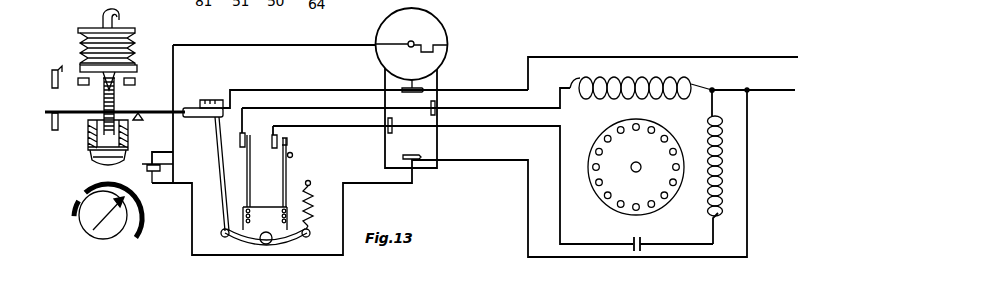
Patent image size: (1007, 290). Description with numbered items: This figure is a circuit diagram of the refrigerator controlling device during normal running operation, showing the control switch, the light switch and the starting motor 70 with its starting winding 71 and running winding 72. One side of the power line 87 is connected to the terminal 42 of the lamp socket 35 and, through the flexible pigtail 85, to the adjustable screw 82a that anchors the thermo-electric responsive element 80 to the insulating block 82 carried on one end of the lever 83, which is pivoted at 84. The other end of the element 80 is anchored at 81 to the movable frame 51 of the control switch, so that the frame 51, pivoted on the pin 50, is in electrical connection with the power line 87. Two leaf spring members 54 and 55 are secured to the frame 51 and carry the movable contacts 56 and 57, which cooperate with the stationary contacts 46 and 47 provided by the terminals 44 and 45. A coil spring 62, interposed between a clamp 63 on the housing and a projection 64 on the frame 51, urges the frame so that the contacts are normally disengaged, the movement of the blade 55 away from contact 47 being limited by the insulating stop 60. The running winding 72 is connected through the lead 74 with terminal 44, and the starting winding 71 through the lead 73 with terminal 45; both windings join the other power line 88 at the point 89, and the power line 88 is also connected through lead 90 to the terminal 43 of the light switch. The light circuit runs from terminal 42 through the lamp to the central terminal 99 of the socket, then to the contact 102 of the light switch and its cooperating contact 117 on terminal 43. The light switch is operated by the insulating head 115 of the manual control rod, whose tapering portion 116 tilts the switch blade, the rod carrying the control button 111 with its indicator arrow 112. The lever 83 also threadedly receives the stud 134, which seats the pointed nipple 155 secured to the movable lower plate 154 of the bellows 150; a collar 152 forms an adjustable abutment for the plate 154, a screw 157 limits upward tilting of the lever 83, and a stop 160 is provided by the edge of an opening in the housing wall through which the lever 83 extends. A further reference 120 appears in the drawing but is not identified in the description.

The socket 35 is at (435, 40).
The terminal 42 is at (424, 89).
The terminal 43 is at (422, 157).
The terminal 44 is at (430, 107).
The terminal 45 is at (386, 134).
The stationary contact 46 is at (240, 143).
The stationary contact 47 is at (274, 148).
The pin 50 is at (266, 246).
The movable frame 51 is at (250, 240).
The leaf spring member 54 is at (252, 172).
The leaf spring member 55 is at (298, 162).
The movable contact 56 is at (246, 133).
The movable contact 57 is at (289, 141).
The stop 60 is at (292, 153).
The coil spring 62 is at (311, 220).
The clamp 63 is at (311, 184).
The projection 64 is at (308, 240).
The starting motor 70 is at (634, 40).
The starting winding 71 is at (723, 162).
The running winding 72 is at (699, 81).
The lead 73 is at (561, 143).
The lead 74 is at (539, 107).
The thermo-electric responsive element 80 is at (224, 187).
The anchor point 81 is at (226, 240).
The insulating block 82 is at (186, 107).
The adjustable screw 82a is at (212, 100).
The lever 83 is at (153, 108).
The pivot 84 is at (140, 122).
The flexible lead or pigtail 85 is at (285, 90).
The power line 87 is at (731, 57).
The power line 88 is at (781, 84).
The connection point 89 is at (709, 94).
The lead 90 is at (510, 160).
The metallic conductor 99 is at (302, 45).
The contact 102 is at (155, 153).
The control button 111 is at (86, 222).
The indicator arrow 112 is at (106, 222).
The insulating head 115 is at (90, 143).
The tapering portion 116 is at (93, 162).
The contact 117 is at (165, 168).
The switch mechanism 120 is at (378, 57).
The stud 134 is at (103, 96).
The bellows 150 is at (78, 37).
The collar 152 is at (78, 80).
The lower plate 154 is at (100, 50).
The nipple 155 is at (110, 80).
The screw 157 is at (50, 76).
The stop 160 is at (52, 128).